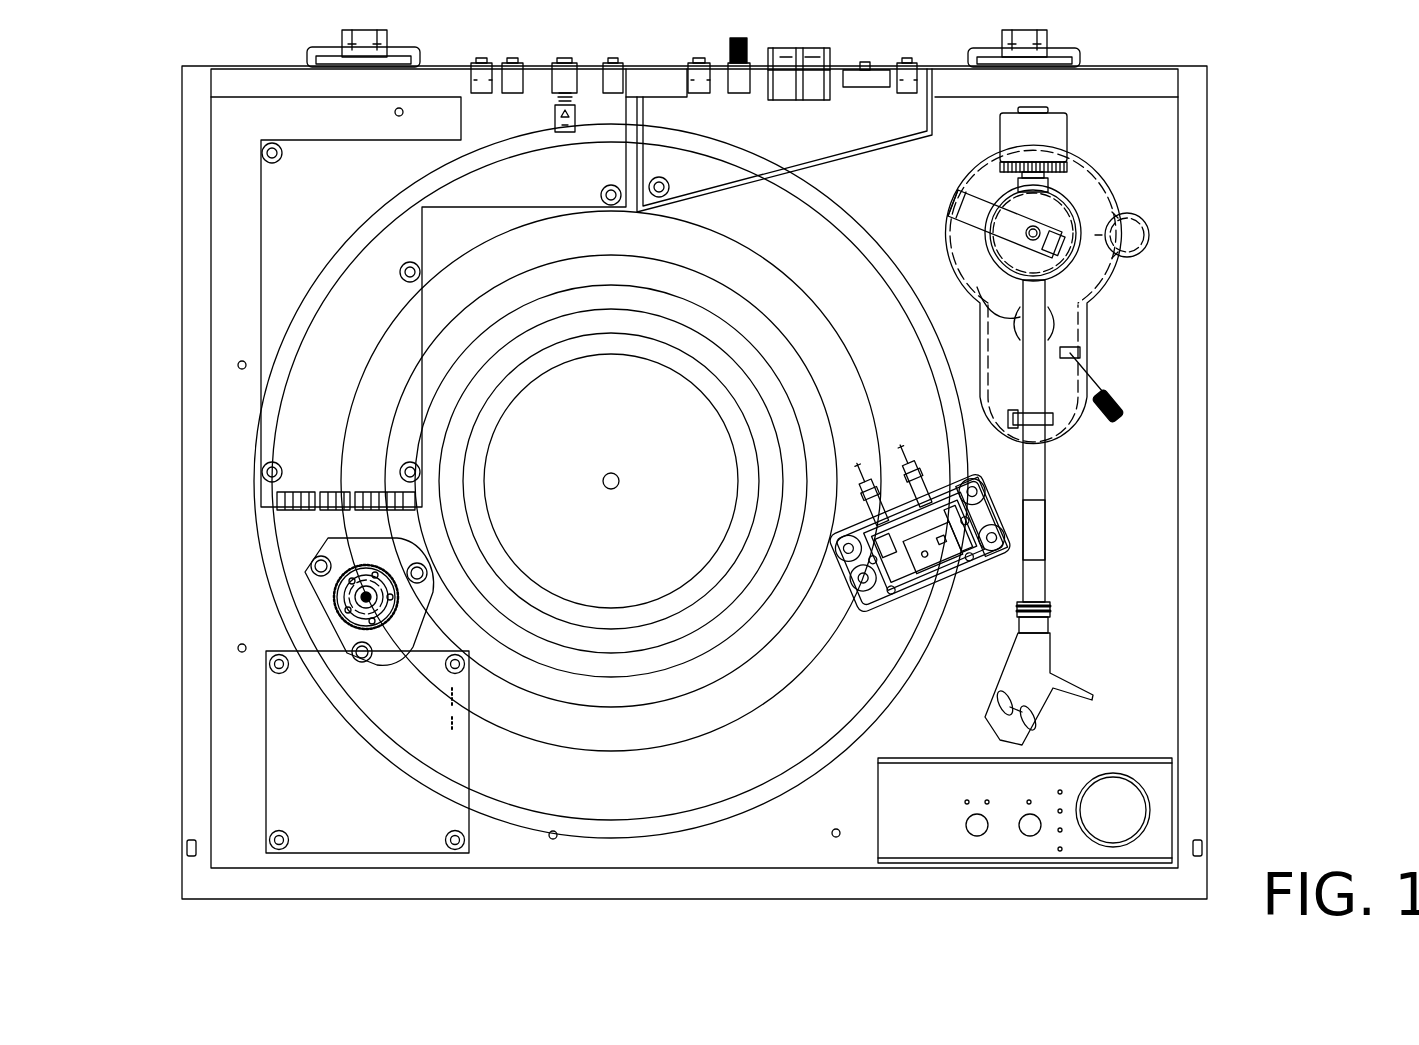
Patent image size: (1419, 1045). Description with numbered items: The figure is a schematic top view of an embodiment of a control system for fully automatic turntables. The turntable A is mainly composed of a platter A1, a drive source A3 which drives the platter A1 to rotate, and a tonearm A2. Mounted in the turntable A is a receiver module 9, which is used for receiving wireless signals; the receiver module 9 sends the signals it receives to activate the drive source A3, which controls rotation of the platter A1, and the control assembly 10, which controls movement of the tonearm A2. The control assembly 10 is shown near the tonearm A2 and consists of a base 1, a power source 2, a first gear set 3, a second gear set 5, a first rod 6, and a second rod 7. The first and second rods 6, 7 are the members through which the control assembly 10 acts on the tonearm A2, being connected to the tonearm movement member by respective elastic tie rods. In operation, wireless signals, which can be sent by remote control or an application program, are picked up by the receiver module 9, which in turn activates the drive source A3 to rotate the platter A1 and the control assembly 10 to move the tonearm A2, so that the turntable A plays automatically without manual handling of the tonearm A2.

The turntable A is at (1207, 456).
The platter A1 is at (815, 777).
The tonearm A2 is at (1035, 573).
The drive source A3 is at (335, 597).
The base 1 is at (930, 598).
The power source 2 is at (958, 585).
The first gear set 3 is at (868, 595).
The second gear set 5 is at (995, 516).
The first rod 6 is at (884, 477).
The second rod 7 is at (931, 475).
The receiver module 9 is at (340, 812).
The control assembly 10 is at (1030, 533).